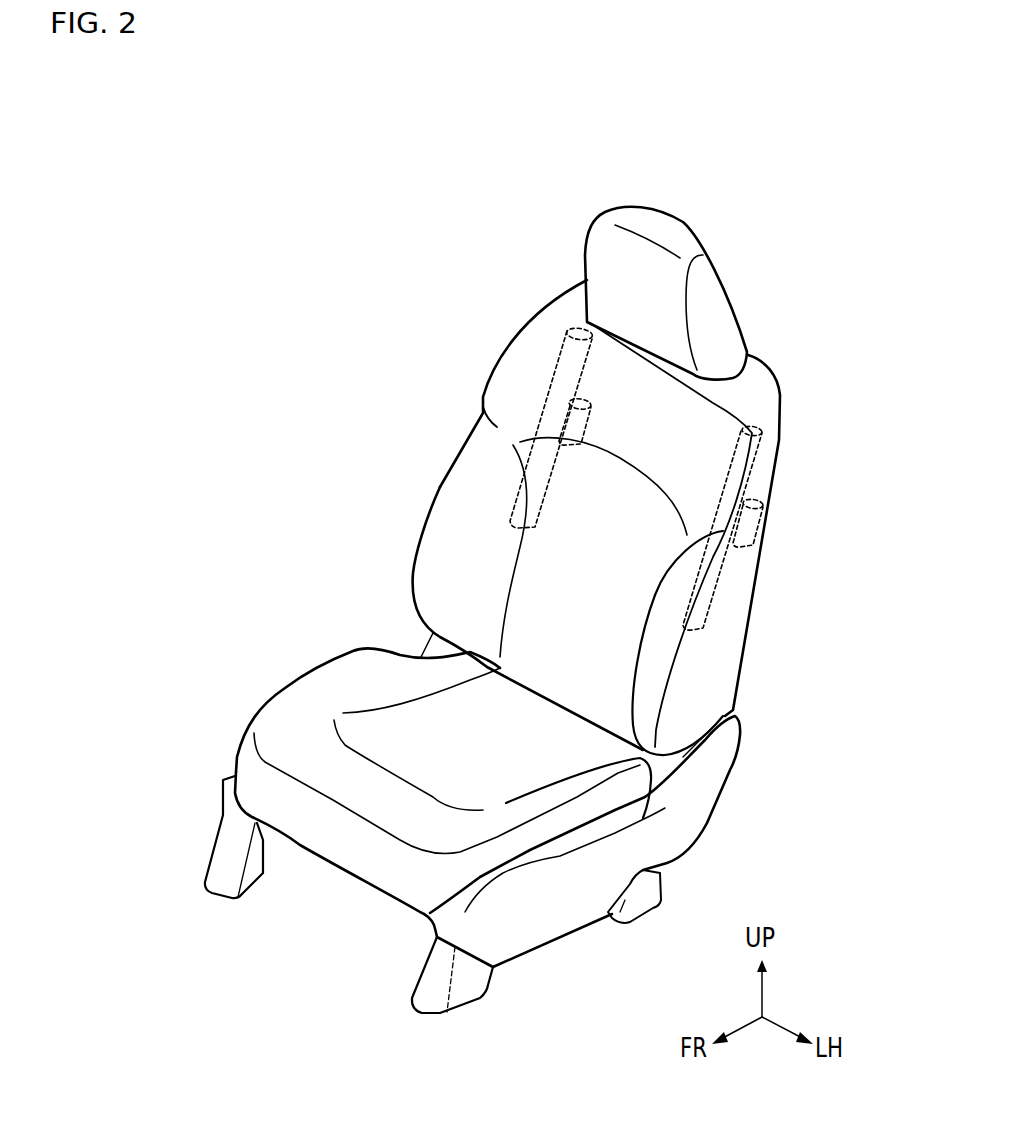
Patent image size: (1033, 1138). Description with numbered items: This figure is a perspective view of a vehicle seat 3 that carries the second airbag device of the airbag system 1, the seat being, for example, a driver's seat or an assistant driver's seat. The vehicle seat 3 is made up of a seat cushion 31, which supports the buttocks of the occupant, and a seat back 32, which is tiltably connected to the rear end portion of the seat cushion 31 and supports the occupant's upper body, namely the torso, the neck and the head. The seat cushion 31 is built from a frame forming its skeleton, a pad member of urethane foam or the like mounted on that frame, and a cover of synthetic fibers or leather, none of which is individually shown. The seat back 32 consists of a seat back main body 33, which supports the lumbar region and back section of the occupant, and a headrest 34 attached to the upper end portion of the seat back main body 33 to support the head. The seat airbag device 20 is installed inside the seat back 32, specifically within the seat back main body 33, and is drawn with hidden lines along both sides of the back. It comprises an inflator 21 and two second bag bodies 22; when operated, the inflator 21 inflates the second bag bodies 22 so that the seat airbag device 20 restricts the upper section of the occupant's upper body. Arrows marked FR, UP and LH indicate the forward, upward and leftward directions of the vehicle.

The vehicle seat 1 is at (399, 205).
The vehicle seat 3 is at (436, 478).
The seat airbag device 20 is at (756, 460).
The inflator 21 is at (582, 393).
The second bag bodies 22 is at (563, 346).
The seat cushion 31 is at (343, 690).
The seat back 32 is at (473, 450).
The seat back main body 33 is at (747, 590).
The headrest 34 is at (653, 226).